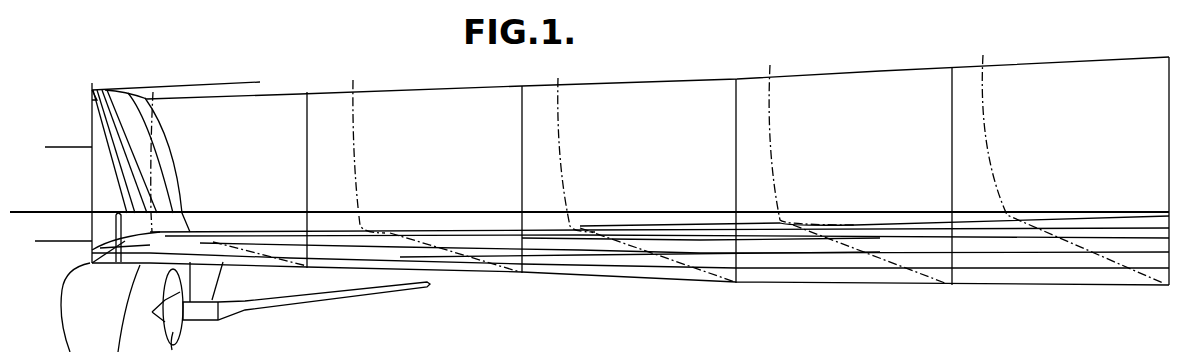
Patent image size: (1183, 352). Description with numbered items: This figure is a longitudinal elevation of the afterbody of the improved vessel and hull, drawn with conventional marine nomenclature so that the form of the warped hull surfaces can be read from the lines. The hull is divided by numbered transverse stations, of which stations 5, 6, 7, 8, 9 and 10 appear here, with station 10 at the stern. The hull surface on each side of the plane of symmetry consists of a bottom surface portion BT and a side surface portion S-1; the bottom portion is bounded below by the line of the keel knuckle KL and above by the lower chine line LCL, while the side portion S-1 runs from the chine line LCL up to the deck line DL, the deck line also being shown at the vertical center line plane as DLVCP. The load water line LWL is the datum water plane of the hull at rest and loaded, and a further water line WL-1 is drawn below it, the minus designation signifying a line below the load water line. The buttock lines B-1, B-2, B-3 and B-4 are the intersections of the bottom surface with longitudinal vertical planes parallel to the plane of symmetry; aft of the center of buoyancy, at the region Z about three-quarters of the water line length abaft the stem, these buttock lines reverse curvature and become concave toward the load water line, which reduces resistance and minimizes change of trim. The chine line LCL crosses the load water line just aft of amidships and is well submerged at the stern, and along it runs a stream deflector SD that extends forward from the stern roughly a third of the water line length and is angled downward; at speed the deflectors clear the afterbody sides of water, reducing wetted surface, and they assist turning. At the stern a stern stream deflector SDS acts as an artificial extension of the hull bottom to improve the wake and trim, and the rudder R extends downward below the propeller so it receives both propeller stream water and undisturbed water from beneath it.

The station 5 is at (1168, 182).
The station 6 is at (952, 187).
The station 7 is at (737, 193).
The station 8 is at (523, 190).
The station 9 is at (305, 190).
The station 10 is at (139, 185).
The rudder R is at (75, 310).
The region of buttock line curvature reversal Z is at (333, 238).
The stream deflector SD is at (473, 233).
The stern stream deflector SDS is at (92, 255).
The keel knuckle line KL is at (625, 278).
The lower chine line LCL is at (902, 222).
The bottom surface portion BT is at (1050, 248).
The buttock line B-1 is at (778, 267).
The buttock line B-2 is at (838, 250).
The buttock line B-3 is at (982, 242).
The buttock line B-4 is at (1082, 228).
The side surface portion S-1 is at (548, 174).
The deck line DL is at (645, 80).
The deck line at vertical center line plane DLVCP is at (199, 82).
The load water line LWL is at (589, 203).
The water line minus one WL-1 is at (63, 233).